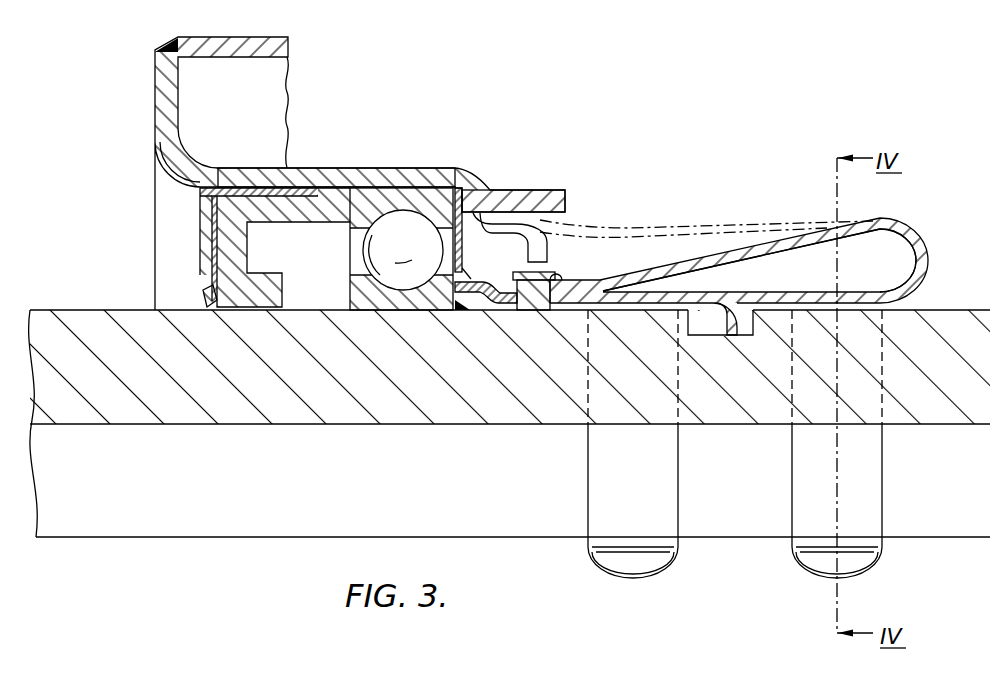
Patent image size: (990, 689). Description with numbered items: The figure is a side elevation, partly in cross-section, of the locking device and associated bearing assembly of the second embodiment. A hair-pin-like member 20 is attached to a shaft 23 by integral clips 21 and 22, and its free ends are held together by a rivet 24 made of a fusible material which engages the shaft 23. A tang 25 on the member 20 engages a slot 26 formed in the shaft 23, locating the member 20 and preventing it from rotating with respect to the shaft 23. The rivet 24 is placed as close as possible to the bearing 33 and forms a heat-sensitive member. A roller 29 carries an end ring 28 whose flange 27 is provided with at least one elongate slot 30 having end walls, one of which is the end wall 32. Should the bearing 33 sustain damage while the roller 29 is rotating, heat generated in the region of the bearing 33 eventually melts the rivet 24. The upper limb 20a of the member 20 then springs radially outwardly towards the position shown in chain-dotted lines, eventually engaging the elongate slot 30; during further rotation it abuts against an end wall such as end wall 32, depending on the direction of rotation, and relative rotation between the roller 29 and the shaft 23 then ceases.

The hair-pin-like member 20 is at (659, 253).
The upper limb 20a is at (720, 257).
The clip 21 is at (645, 476).
The clip 22 is at (836, 476).
The shaft 23 is at (113, 335).
The rivet 24 is at (524, 312).
The tang 25 is at (742, 308).
The slot 26 is at (708, 335).
The flange 27 is at (548, 259).
The end ring 28 is at (337, 178).
The roller 29 is at (165, 107).
The elongate slot 30 is at (490, 214).
The end wall 32 is at (473, 217).
The bearing 33 is at (357, 258).